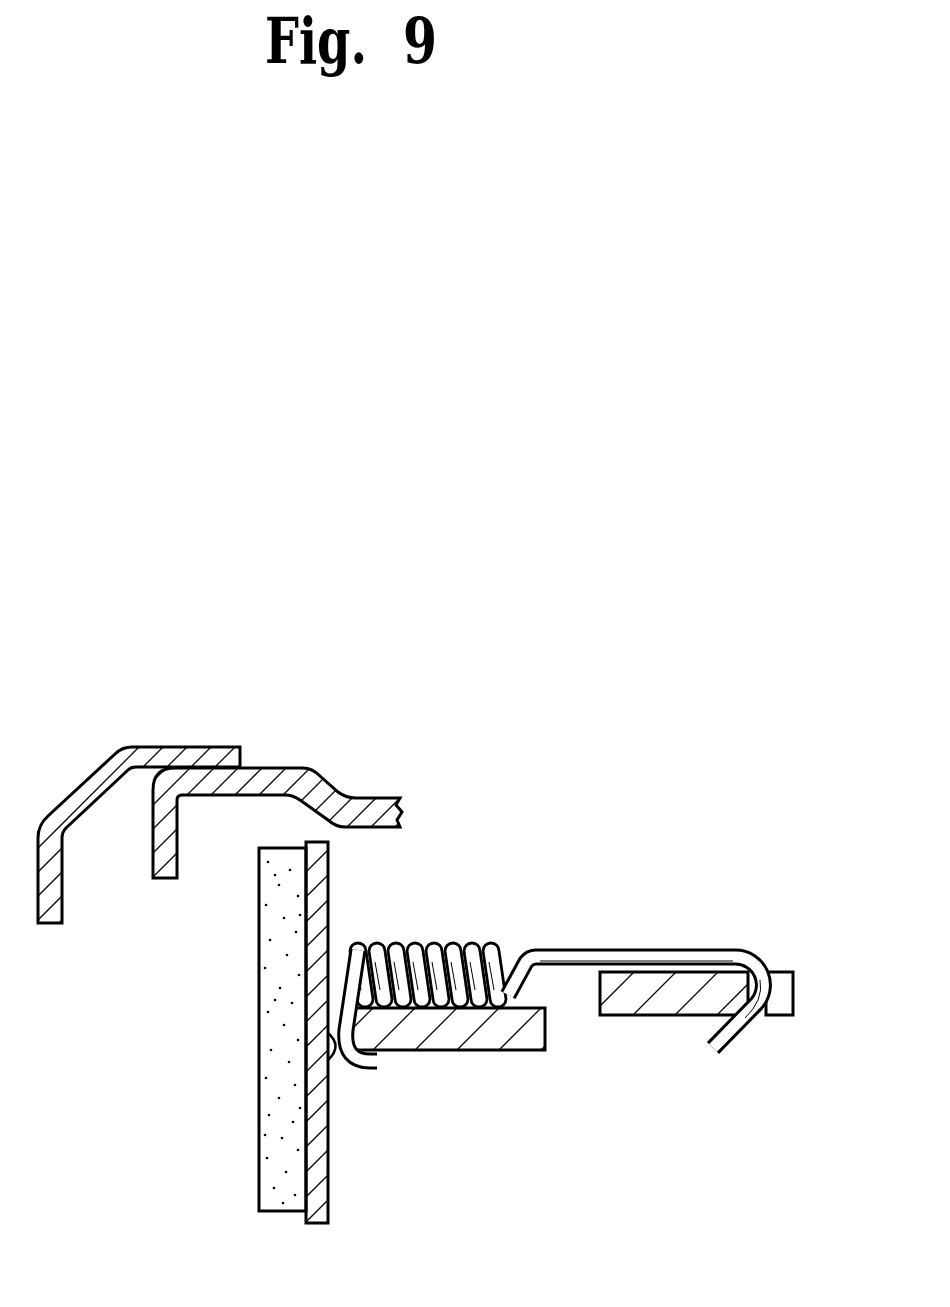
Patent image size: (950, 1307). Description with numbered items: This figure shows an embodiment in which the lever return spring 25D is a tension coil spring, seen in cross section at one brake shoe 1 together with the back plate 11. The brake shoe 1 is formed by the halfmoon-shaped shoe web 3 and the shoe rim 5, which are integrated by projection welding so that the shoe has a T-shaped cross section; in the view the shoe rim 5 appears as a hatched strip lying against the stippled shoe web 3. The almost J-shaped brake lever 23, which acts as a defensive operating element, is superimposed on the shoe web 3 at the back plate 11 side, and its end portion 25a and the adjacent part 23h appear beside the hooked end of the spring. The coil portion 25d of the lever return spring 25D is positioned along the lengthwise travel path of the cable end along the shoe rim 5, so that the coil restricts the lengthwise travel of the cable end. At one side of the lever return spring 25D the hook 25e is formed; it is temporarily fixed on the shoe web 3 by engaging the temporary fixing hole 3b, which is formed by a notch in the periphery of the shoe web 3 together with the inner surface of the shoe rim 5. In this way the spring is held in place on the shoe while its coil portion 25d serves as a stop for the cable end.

The brake shoe 1 is at (253, 1047).
The shoe web 3 is at (537, 1008).
The temporary fixing hole 3b is at (345, 1073).
The shoe rim 5 is at (327, 1195).
The back plate 11 is at (305, 770).
The brake lever 23 is at (673, 978).
The hole of lever arm 23h is at (795, 1003).
The lever return spring 25D is at (582, 964).
The coil portion 25d is at (397, 943).
The hook end of spring 25a is at (765, 980).
The hook 25e is at (363, 1070).